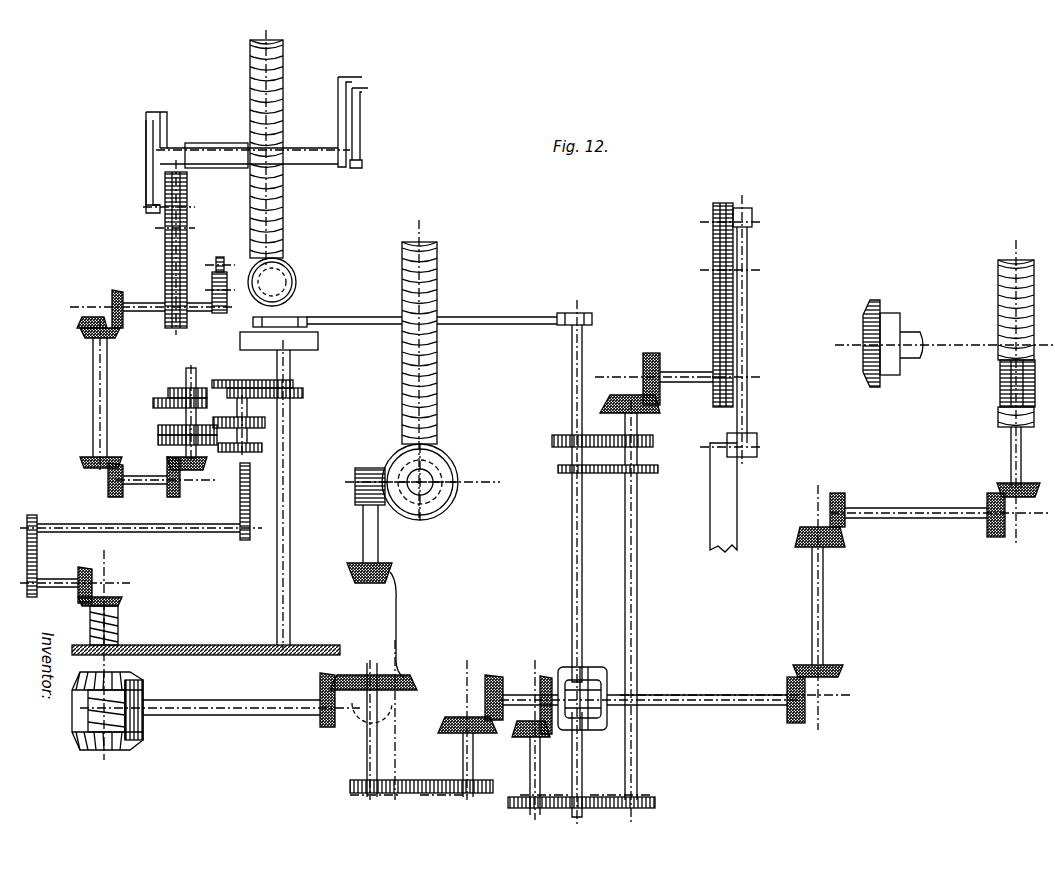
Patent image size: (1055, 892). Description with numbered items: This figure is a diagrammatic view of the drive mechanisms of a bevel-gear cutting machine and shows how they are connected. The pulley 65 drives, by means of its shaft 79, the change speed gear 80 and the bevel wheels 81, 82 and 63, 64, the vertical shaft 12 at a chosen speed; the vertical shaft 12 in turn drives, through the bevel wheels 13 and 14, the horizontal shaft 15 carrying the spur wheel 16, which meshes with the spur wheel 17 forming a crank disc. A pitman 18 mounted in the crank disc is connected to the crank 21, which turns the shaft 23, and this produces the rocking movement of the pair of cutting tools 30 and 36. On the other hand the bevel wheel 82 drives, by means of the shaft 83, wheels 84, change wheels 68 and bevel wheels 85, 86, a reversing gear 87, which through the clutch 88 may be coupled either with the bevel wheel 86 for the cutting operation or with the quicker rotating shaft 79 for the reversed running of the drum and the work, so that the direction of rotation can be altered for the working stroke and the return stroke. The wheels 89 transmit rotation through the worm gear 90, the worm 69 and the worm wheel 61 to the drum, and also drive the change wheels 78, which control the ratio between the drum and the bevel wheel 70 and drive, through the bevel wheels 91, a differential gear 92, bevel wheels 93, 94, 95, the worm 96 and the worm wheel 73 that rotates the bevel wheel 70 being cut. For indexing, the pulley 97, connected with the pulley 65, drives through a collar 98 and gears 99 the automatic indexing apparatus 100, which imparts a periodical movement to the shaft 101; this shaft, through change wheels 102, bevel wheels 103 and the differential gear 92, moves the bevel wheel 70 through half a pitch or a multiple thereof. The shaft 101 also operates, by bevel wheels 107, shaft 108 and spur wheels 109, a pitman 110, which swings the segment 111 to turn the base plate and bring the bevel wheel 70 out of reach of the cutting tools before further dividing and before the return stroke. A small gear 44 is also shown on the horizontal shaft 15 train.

The vertical shaft 12 is at (93, 380).
The bevel wheel 13 is at (80, 320).
The bevel wheel 14 is at (112, 293).
The horizontal shaft 15 is at (130, 303).
The spur wheel 16 is at (120, 335).
The spur wheel 17 is at (165, 236).
The pitman 18 is at (146, 178).
The crank 21 is at (167, 122).
The shaft 23 is at (213, 145).
The cutting tool 30 is at (362, 78).
The cutting tool 36 is at (368, 90).
The gear 44 is at (220, 257).
The worm wheel 61 is at (283, 200).
The bevel wheel 63 is at (108, 485).
The bevel wheel 64 is at (80, 462).
The pulley 65 is at (318, 338).
The change wheels 68 is at (37, 552).
The worm 69 is at (296, 270).
The bevel wheel 70 is at (874, 300).
The worm wheel 73 is at (998, 262).
The change wheels 78 is at (410, 780).
The shaft 79 is at (290, 372).
The change speed gear 80 is at (262, 448).
The bevel wheel 81 is at (195, 470).
The bevel wheel 82 is at (167, 480).
The shaft 83 is at (240, 470).
The wheels 84 is at (252, 517).
The bevel wheel 85 is at (92, 572).
The bevel wheel 86 is at (120, 598).
The reversing gear 87 is at (143, 735).
The clutch 88 is at (90, 626).
The wheels 89 is at (396, 625).
The worm gear 90 is at (372, 468).
The bevel wheels 91 is at (470, 697).
The differential gear 92 is at (587, 730).
The bevel wheel 93 is at (800, 715).
The bevel wheel 94 is at (845, 496).
The bevel wheel 95 is at (987, 494).
The worm 96 is at (1000, 392).
The pulley 97 is at (285, 318).
The collar 98 is at (575, 313).
The gears 99 is at (552, 438).
The automatic indexing apparatus 100 is at (640, 455).
The shaft 101 is at (634, 628).
The change wheels 102 is at (590, 797).
The bevel wheels 103 is at (548, 672).
The bevel wheels 107 is at (640, 375).
The shaft 108 is at (690, 372).
The spur wheels 109 is at (733, 206).
The pitman 110 is at (747, 308).
The segment 111 is at (737, 490).